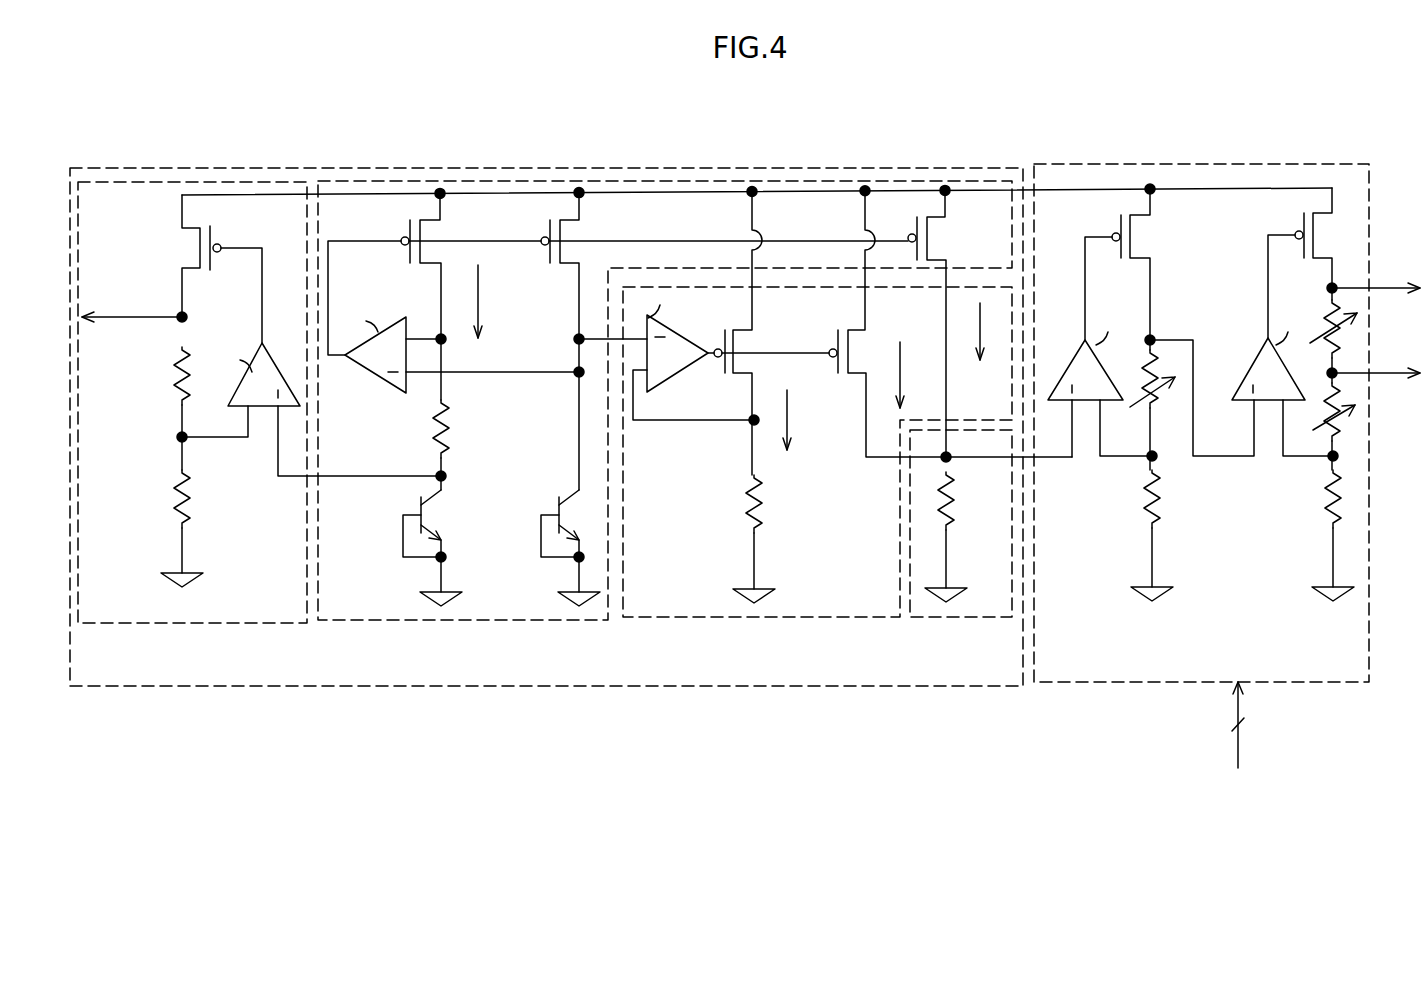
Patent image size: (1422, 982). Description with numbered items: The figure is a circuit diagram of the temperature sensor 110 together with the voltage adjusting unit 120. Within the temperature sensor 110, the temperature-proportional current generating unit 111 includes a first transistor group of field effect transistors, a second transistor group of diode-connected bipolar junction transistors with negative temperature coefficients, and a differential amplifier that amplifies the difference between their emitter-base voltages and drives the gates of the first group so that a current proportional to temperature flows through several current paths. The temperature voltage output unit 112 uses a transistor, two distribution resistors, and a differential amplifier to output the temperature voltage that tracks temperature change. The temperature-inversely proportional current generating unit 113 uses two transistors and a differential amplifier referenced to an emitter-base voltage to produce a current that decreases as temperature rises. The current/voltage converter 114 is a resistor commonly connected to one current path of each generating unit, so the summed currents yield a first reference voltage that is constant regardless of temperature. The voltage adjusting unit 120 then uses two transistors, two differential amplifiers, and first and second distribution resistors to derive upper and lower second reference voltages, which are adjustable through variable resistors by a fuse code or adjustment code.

The temperature sensor 110 is at (640, 686).
The temperature-proportional current generating unit 111 is at (465, 620).
The temperature voltage output unit 112 is at (193, 623).
The temperature-inversely proportional current generating unit 113 is at (762, 618).
The current/voltage converter 114 is at (962, 617).
The voltage adjusting unit 120 is at (1067, 682).